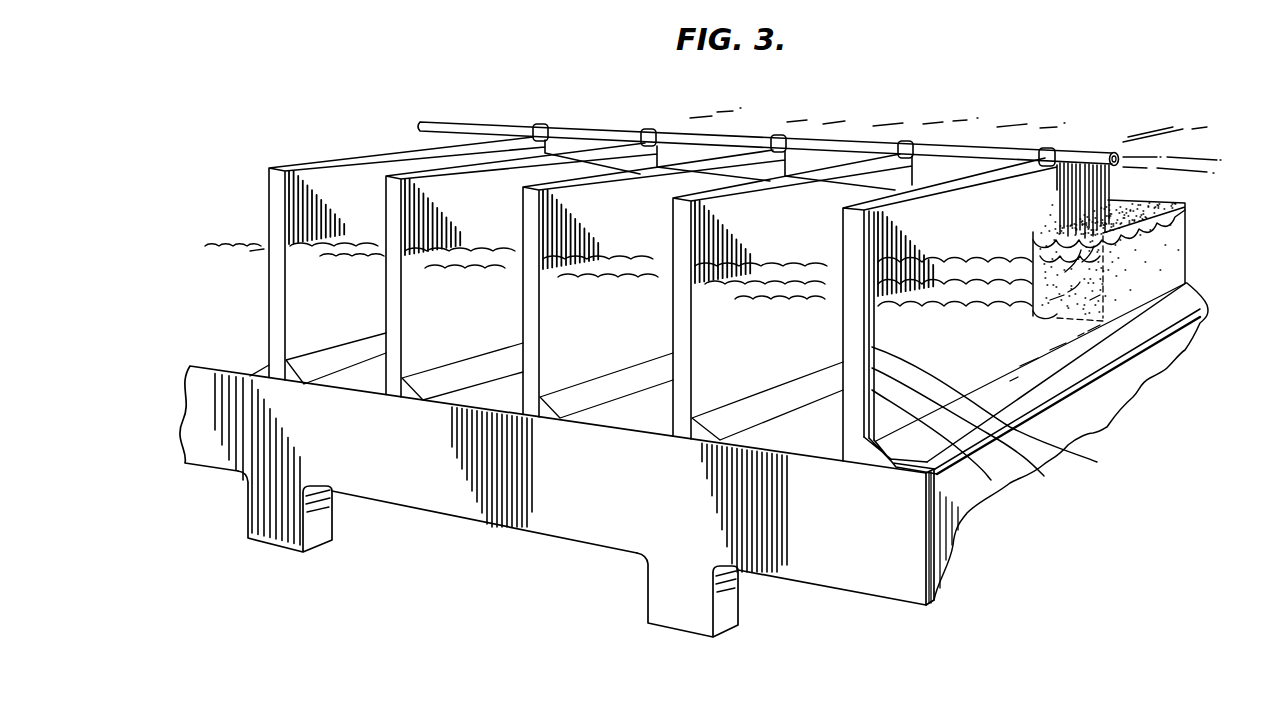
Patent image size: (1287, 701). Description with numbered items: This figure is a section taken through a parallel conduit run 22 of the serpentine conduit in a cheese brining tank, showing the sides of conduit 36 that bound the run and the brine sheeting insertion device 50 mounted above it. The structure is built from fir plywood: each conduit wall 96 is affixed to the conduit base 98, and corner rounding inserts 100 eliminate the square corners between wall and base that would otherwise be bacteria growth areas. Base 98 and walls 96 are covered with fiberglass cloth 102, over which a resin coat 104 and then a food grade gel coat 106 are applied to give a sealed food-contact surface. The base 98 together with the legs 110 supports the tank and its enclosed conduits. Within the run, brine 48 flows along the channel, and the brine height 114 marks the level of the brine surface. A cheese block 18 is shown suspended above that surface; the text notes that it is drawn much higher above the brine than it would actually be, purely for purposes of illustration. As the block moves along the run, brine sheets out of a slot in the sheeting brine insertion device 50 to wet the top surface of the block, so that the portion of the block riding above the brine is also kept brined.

The cheese block 18 is at (1185, 213).
The parallel conduit run 22 is at (814, 262).
The side of conduit 36 is at (763, 222).
The brine 48 is at (493, 273).
The sheeting brine insertion device 50 is at (1078, 153).
The conduit wall 96 is at (853, 457).
The conduit base 98 is at (895, 488).
The corner rounding inserts 100 is at (873, 463).
The fiberglass cloth 102 is at (991, 480).
The resin coat 104 is at (1044, 476).
The gel coat 106 is at (1097, 462).
The legs 110 is at (281, 549).
The brine height 114 is at (462, 248).